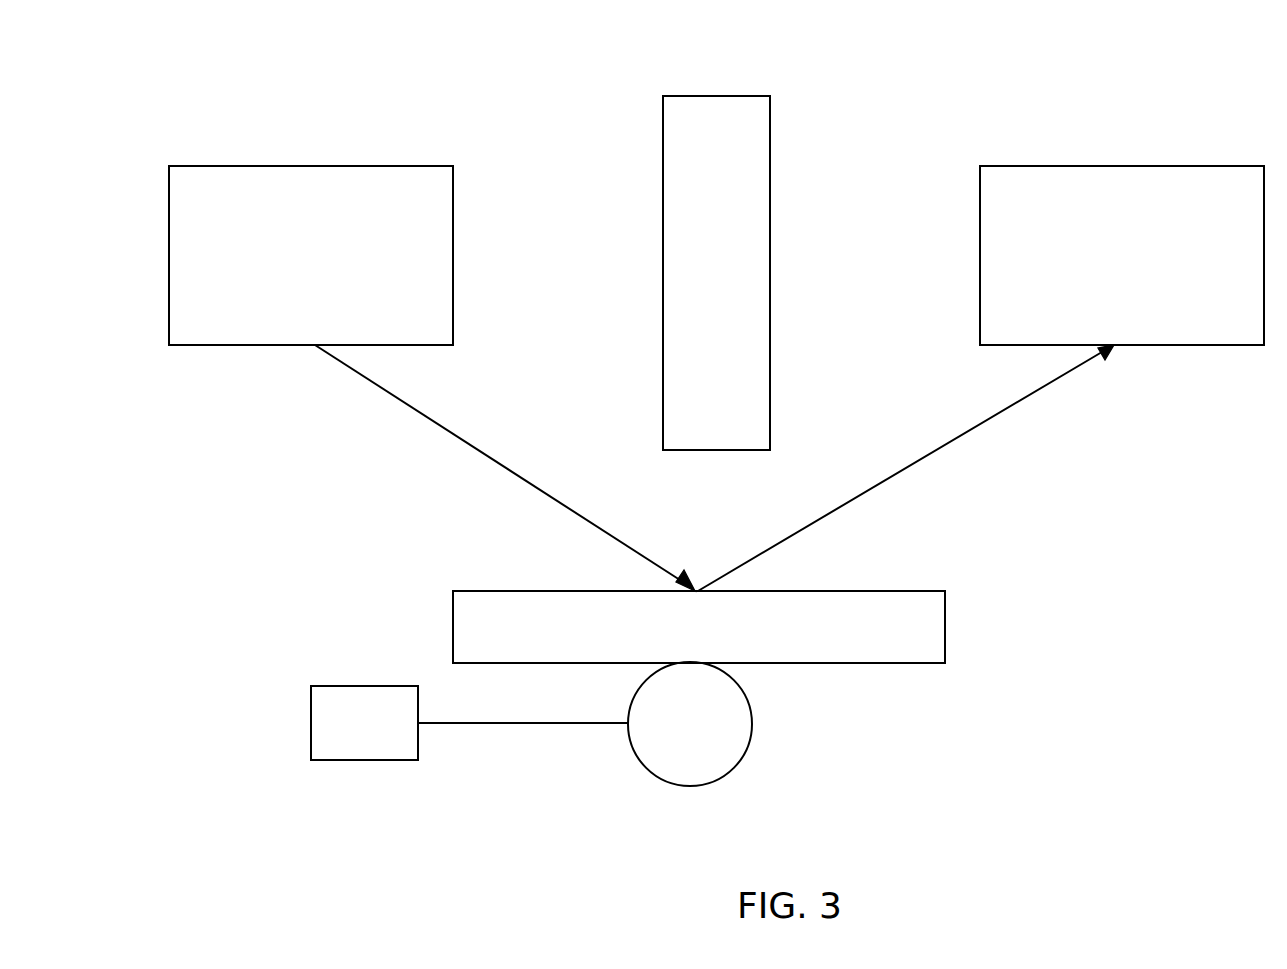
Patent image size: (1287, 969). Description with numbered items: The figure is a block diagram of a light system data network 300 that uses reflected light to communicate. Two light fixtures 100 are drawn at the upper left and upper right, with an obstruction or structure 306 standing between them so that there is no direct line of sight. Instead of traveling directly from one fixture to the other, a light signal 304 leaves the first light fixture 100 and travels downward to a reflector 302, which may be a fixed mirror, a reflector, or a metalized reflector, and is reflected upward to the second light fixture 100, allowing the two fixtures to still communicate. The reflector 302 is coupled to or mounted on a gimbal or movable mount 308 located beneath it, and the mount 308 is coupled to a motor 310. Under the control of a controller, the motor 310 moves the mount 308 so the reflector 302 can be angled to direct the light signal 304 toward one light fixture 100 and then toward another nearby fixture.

The light system data network 300 is at (126, 54).
The light fixture 100 is at (1145, 277).
The reflector 302 is at (718, 637).
The light signal 304 is at (543, 492).
The obstruction or structure 306 is at (736, 284).
The movable mount 308 is at (710, 733).
The motor 310 is at (383, 749).